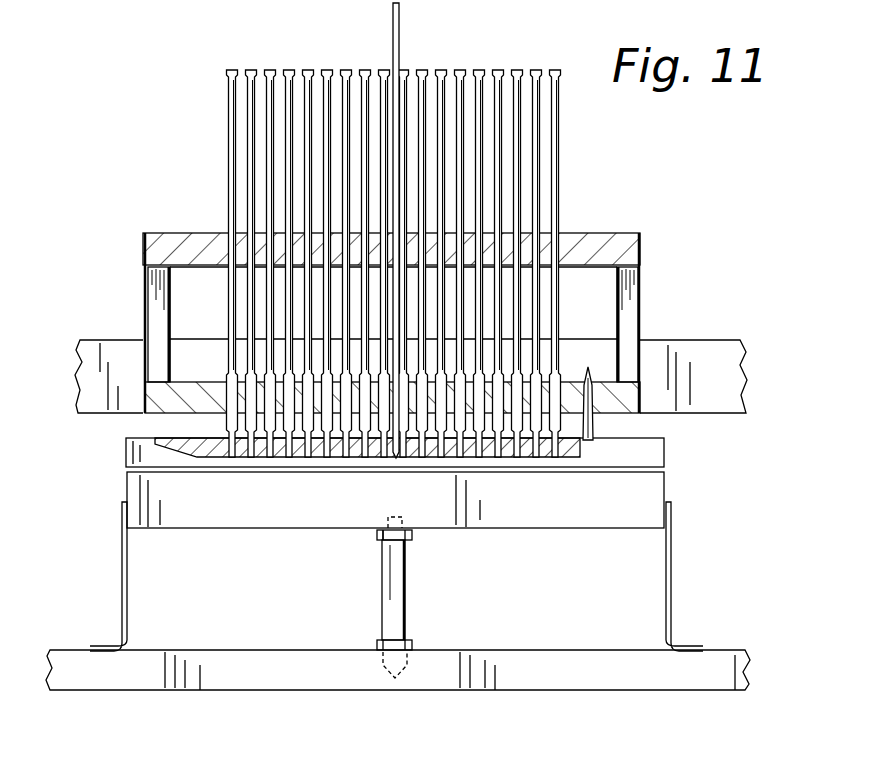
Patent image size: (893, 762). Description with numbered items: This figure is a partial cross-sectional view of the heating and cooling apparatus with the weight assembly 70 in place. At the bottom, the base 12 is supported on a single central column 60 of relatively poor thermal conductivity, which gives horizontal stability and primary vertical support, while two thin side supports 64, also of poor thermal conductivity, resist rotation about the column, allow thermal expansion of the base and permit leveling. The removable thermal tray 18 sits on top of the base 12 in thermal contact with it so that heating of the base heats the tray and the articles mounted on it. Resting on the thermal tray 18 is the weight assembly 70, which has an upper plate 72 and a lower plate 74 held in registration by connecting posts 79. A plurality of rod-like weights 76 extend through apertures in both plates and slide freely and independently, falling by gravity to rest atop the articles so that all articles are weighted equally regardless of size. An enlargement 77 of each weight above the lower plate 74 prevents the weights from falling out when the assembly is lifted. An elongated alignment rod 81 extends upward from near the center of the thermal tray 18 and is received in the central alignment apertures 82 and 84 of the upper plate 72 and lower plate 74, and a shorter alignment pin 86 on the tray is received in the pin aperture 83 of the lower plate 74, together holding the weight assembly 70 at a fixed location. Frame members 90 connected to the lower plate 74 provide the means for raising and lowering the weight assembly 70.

The base 12 is at (652, 492).
The thermal tray 18 is at (652, 455).
The central column 60 is at (407, 582).
The side supports 64 is at (129, 579).
The weight assembly 70 is at (667, 186).
The upper plate 72 is at (165, 233).
The lower plate 74 is at (152, 414).
The weights 76 is at (538, 108).
The enlargement 77 is at (347, 66).
The connecting posts 79 is at (152, 300).
The alignment rod 81 is at (232, 68).
The alignment aperture of upper plate 82 is at (385, 268).
The pin aperture 83 is at (594, 420).
The alignment aperture of lower plate 84 is at (400, 458).
The alignment pin 86 is at (596, 423).
The frame members 90 is at (703, 345).